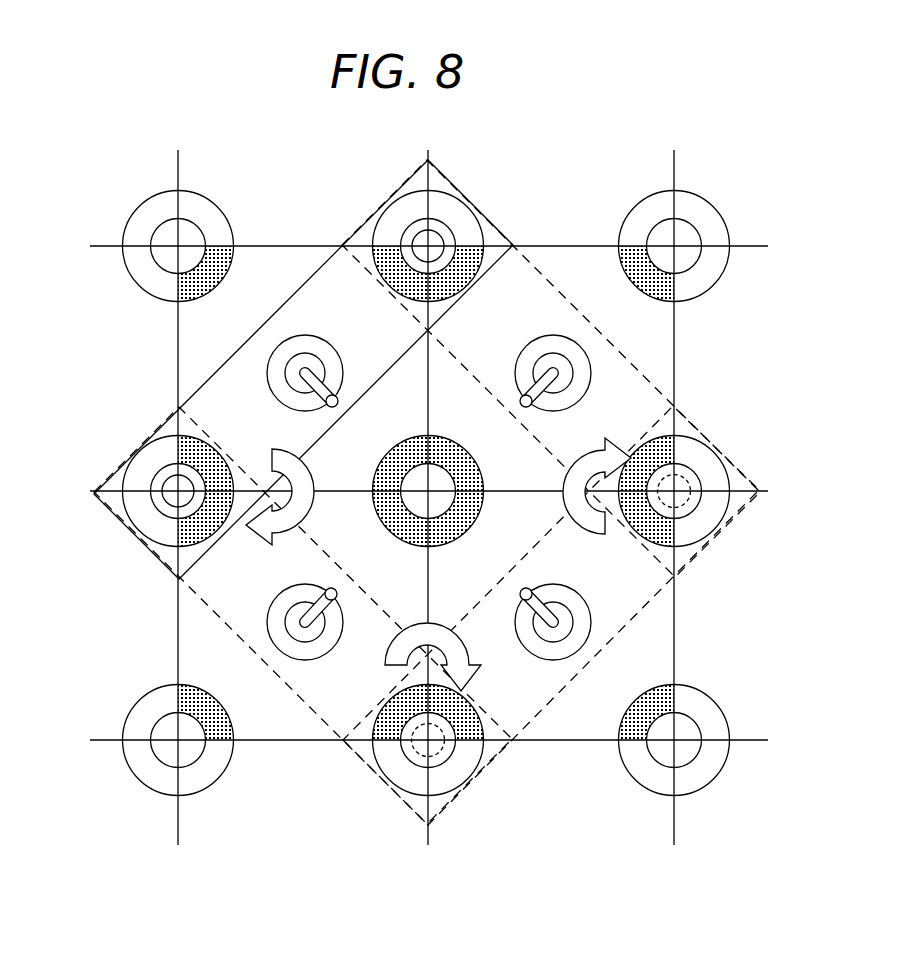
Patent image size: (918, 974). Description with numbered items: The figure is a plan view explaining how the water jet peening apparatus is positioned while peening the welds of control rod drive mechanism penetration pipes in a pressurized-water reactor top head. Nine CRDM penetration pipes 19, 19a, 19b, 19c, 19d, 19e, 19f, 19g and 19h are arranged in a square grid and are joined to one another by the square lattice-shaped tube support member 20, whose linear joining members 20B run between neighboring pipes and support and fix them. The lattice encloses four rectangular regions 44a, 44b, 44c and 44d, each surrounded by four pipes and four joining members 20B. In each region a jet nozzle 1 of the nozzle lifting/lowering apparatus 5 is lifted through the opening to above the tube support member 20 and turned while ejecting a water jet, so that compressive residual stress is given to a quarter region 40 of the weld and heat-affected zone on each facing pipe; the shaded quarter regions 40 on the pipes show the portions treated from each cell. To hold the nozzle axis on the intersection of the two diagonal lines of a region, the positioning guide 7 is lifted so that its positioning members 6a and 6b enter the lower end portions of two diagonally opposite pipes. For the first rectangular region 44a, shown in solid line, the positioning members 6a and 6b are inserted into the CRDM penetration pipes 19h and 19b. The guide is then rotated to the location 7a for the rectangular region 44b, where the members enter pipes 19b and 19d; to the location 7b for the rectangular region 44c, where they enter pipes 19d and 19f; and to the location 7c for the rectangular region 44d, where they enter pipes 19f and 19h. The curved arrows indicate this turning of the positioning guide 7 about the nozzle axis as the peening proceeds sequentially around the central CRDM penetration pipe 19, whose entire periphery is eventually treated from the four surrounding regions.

The jet nozzle 1 is at (345, 388).
The nozzle lifting/lowering apparatus 5 is at (270, 395).
The positioning member 6a is at (415, 238).
The positioning member 6b is at (168, 503).
The positioning guide 7 is at (291, 302).
The location of positioning guide 7a is at (310, 690).
The location of positioning guide 7b is at (626, 615).
The location of positioning guide 7c is at (625, 352).
The CRDM penetration pipe 19 is at (483, 474).
The CRDM penetration pipe 19a is at (176, 215).
The CRDM penetration pipe 19b is at (125, 512).
The CRDM penetration pipe 19c is at (140, 783).
The CRDM penetration pipe 19d is at (450, 797).
The CRDM penetration pipe 19e is at (724, 716).
The CRDM penetration pipe 19f is at (722, 464).
The CRDM penetration pipe 19g is at (712, 215).
The CRDM penetration pipe 19h is at (472, 222).
The tube support member 20 is at (585, 243).
The joining member 20B is at (281, 245).
The quarter region 40 is at (212, 290).
The rectangular region 44a is at (182, 337).
The rectangular region 44b is at (186, 667).
The rectangular region 44c is at (598, 727).
The rectangular region 44d is at (677, 337).